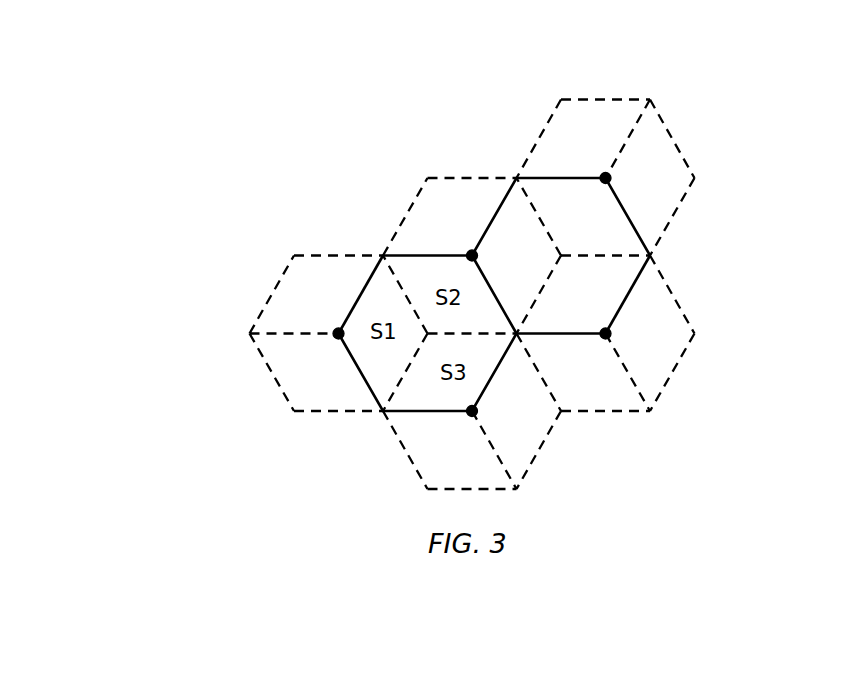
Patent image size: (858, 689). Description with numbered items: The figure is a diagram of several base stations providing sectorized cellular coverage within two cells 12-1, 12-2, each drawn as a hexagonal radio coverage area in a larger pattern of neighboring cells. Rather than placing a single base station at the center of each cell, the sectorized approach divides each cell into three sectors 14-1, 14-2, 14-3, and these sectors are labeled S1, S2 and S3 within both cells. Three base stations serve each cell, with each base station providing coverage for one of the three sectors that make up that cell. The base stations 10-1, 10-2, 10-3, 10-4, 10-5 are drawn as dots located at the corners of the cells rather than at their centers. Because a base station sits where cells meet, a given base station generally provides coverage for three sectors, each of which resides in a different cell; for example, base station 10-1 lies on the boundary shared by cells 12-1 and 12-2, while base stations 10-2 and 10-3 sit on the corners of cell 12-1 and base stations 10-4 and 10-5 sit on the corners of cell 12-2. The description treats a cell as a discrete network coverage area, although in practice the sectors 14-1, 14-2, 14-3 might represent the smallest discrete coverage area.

The base station 10-1 is at (471, 252).
The base station 10-2 is at (608, 176).
The base station 10-3 is at (606, 340).
The base station 10-4 is at (338, 340).
The base station 10-5 is at (472, 416).
The cell 12-1 is at (640, 276).
The cell 12-2 is at (358, 293).
The sector 14-1 is at (499, 233).
The sector 14-2 is at (563, 187).
The sector 14-3 is at (608, 307).